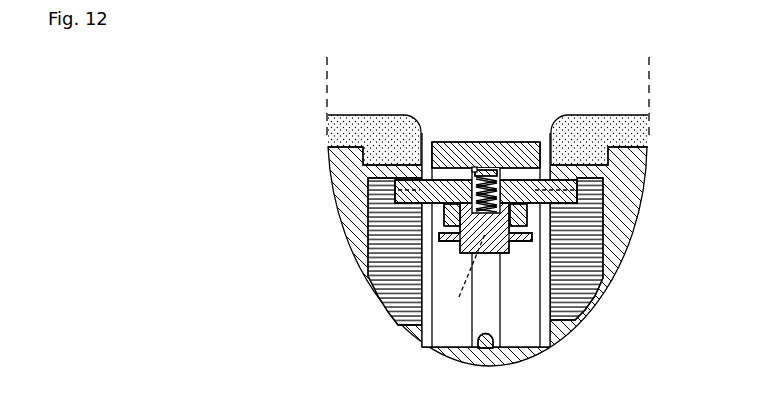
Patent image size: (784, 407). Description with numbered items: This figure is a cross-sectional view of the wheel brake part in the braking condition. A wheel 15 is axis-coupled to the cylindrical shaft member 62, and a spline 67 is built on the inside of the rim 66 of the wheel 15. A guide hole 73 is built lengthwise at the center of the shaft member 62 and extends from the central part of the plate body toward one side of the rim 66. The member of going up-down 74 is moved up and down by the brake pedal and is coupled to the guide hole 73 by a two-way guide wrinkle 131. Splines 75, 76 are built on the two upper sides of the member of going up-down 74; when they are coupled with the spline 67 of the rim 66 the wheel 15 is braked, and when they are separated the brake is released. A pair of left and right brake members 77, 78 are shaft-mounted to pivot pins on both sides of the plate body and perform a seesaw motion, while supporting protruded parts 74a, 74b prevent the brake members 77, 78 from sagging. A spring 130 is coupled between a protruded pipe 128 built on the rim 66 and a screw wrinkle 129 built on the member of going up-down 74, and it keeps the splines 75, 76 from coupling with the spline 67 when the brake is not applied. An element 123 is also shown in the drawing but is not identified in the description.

The wheel 15 is at (363, 117).
The cylindrical shaft member 62 is at (527, 142).
The rim 66 is at (358, 237).
The spline 67 is at (388, 185).
The guide hole 73 is at (528, 322).
The member of going up-down 74 is at (445, 178).
The supporting protruded part 74a is at (440, 243).
The supporting protruded part 74b is at (526, 243).
The spline 75 is at (408, 178).
The spline 76 is at (567, 183).
The brake member 77 is at (455, 228).
The brake member 78 is at (515, 243).
The pin 123 is at (488, 316).
The protruded pipe 128 is at (478, 170).
The screw wrinkle 129 is at (475, 167).
The spring 130 is at (492, 175).
The two-way guide wrinkle 131 is at (465, 272).